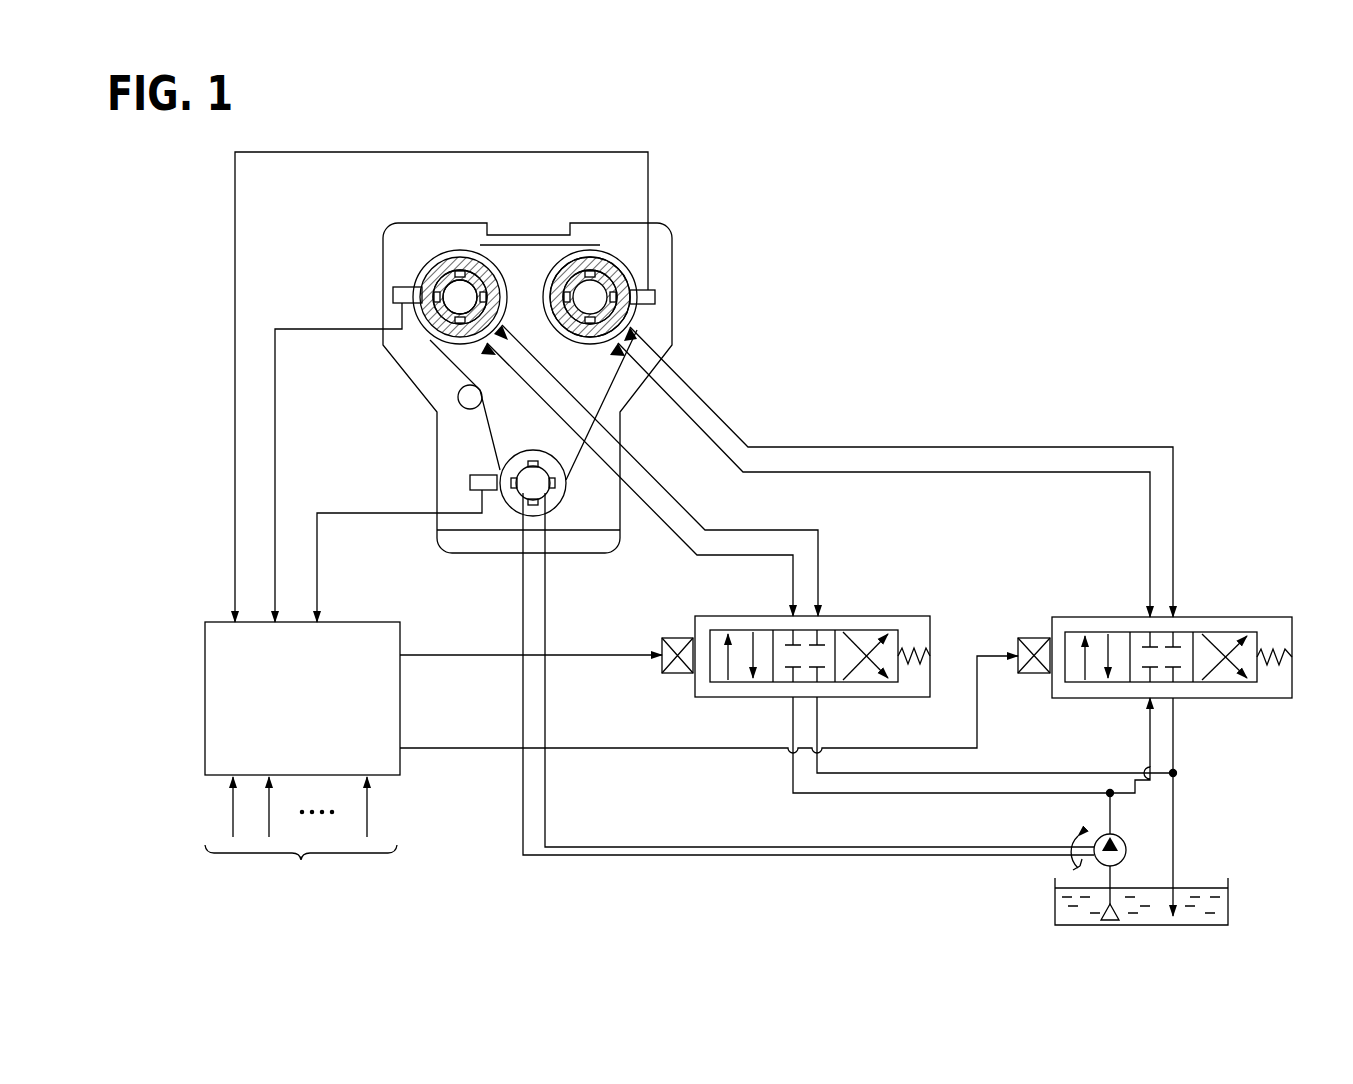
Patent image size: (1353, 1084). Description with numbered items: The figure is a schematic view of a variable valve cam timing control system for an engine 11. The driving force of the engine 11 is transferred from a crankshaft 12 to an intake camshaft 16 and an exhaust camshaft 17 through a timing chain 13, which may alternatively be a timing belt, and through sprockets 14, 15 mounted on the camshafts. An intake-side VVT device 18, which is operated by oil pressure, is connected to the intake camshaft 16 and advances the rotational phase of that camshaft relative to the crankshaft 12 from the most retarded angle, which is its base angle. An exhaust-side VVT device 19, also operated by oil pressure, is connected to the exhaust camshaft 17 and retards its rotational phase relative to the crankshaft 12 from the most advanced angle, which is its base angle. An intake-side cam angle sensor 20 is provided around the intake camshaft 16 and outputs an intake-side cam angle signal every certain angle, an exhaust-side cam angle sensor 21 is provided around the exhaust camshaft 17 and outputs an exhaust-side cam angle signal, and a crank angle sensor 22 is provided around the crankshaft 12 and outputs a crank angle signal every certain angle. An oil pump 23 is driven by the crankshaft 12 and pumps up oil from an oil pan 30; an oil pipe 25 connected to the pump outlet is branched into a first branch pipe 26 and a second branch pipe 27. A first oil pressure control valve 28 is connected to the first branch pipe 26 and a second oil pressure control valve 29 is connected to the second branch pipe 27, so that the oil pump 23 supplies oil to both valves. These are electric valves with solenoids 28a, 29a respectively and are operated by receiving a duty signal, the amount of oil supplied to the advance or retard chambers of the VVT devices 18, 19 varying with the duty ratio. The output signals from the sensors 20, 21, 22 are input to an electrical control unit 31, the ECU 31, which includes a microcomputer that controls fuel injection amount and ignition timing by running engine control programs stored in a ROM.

The engine 11 is at (670, 205).
The crankshaft 12 is at (542, 490).
The timing chain 13 is at (608, 392).
The sprocket 14 is at (610, 262).
The sprocket 15 is at (440, 250).
The intake camshaft 16 is at (570, 278).
The exhaust camshaft 17 is at (463, 268).
The intake-side VVT device 18 is at (632, 262).
The exhaust-side VVT device 19 is at (495, 258).
The intake-side cam angle sensor 20 is at (655, 297).
The exhaust-side cam angle sensor 21 is at (393, 295).
The crank angle sensor 22 is at (472, 476).
The oil pump 23 is at (1127, 850).
The oil pipe 25 is at (1112, 813).
The first branch pipe 26 is at (1133, 803).
The second branch pipe 27 is at (923, 793).
The first oil pressure control valve 28 is at (1203, 610).
The solenoid 28a is at (1027, 636).
The second oil pressure control valve 29 is at (858, 610).
The solenoid 29a is at (670, 636).
The oil pan 30 is at (1228, 897).
The electrical control unit 31 is at (400, 698).